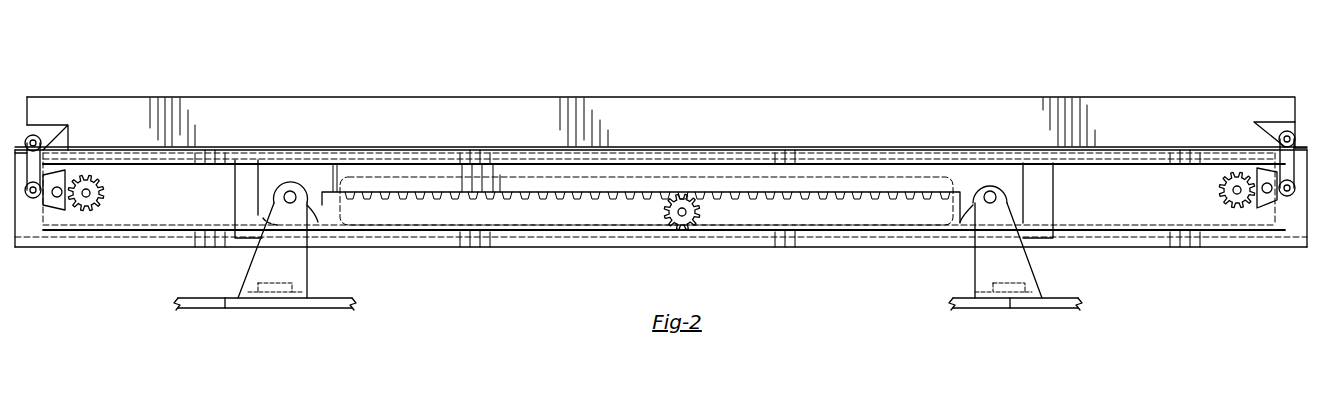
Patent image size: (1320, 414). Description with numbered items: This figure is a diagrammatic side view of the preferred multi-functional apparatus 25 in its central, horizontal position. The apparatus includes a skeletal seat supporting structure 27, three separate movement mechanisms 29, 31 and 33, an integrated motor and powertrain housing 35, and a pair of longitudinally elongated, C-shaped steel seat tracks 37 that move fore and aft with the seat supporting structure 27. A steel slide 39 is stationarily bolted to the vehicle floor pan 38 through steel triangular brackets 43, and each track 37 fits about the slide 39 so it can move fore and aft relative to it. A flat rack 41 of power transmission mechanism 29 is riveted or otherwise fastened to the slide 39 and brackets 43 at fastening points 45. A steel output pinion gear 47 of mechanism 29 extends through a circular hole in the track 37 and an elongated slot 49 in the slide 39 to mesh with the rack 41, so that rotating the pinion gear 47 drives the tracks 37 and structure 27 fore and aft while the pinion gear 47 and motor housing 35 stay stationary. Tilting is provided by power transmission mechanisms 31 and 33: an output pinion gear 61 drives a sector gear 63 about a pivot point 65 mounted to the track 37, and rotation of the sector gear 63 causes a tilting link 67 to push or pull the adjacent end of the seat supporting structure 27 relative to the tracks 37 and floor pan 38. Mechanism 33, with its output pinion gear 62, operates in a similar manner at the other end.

The multi-functional apparatus 25 is at (738, 64).
The seat supporting structure 27 is at (357, 122).
The power transmission mechanism 29 is at (626, 265).
The power transmission mechanism 31 is at (65, 268).
The power transmission mechanism 33 is at (1232, 256).
The integrated motor and powertrain housing 35 is at (443, 212).
The seat track 37 is at (136, 248).
The floor pan 38 is at (225, 302).
The slide 39 is at (1040, 210).
The rack 41 is at (328, 178).
The triangular bracket 43 is at (283, 267).
The fastening point 45 is at (290, 190).
The output pinion gear 47 is at (678, 200).
The elongated slot 49 is at (850, 215).
The output pinion gear 61 is at (86, 185).
The output pinion gear 62 is at (1237, 172).
The sector gear 63 is at (30, 200).
The pivot point 65 is at (57, 198).
The tilting link 67 is at (24, 100).